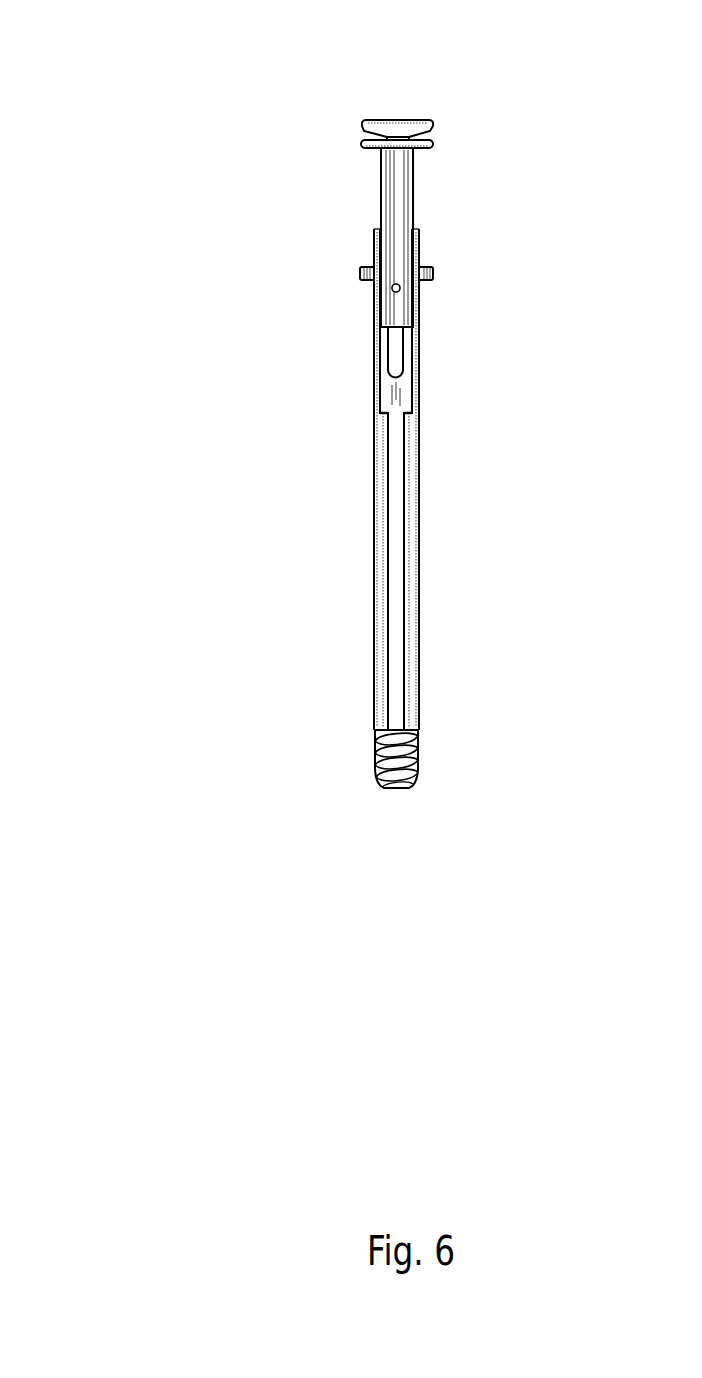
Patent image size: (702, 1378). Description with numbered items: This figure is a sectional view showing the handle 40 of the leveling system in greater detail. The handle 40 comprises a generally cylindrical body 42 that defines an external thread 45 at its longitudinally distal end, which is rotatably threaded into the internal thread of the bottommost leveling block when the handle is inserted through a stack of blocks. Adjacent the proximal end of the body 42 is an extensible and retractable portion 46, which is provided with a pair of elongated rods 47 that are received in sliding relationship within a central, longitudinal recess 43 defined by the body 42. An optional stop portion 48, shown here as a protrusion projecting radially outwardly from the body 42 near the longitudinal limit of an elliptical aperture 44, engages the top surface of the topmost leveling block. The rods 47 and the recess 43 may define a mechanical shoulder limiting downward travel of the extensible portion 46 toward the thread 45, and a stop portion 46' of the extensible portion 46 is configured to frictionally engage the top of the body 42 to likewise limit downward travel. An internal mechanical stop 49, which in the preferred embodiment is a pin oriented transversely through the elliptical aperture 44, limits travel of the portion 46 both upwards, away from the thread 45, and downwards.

The handle 40 is at (62, 88).
The cylindrical body 42 is at (420, 585).
The central longitudinal recess 43 is at (405, 407).
The elliptical aperture 44 is at (392, 358).
The external thread 45 is at (380, 762).
The extensible and retractable portion 46 is at (361, 107).
The stop portion 46' is at (442, 150).
The elongated rod 47 is at (400, 200).
The stop portion 48 is at (360, 272).
The internal mechanical stop 49 is at (393, 292).